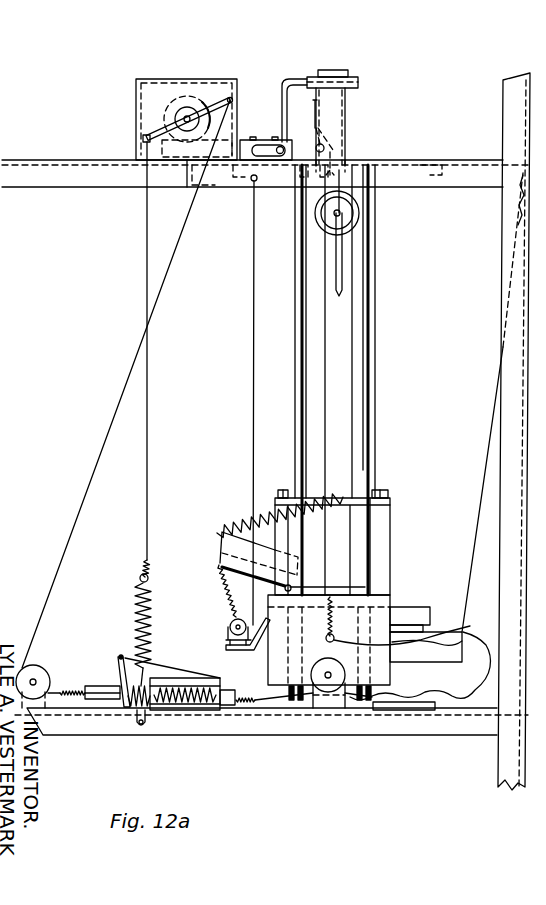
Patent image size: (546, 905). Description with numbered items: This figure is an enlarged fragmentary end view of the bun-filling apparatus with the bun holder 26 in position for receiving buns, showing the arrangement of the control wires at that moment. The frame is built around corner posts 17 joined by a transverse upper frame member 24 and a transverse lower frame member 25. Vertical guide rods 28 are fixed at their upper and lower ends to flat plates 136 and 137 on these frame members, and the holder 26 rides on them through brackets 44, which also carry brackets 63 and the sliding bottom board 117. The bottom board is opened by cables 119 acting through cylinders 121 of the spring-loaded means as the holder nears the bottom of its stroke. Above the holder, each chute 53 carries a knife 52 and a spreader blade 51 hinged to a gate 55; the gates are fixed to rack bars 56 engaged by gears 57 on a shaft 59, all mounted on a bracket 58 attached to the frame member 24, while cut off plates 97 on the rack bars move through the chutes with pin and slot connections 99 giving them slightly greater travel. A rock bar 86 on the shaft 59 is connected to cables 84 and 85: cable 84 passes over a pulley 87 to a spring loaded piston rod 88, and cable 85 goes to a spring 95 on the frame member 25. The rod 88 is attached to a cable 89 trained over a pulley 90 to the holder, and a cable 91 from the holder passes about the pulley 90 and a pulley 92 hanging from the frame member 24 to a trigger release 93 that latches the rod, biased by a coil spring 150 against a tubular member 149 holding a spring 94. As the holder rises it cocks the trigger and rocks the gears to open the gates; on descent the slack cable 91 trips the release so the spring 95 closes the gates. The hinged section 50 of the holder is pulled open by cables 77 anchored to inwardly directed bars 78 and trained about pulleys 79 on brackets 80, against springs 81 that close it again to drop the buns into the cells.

The corner posts 17 is at (503, 223).
The upper transverse frame member 24 is at (85, 178).
The lower transverse frame member 25 is at (112, 730).
The bun holder 26 is at (335, 530).
The guide rods 28 is at (298, 295).
The brackets 44 is at (383, 613).
The hinged section 50 is at (218, 557).
The spreader blade 51 is at (336, 252).
The knife 52 is at (343, 252).
The chute 53 is at (340, 118).
The gates 55 is at (335, 148).
The rack bars 56 is at (218, 142).
The gears 57 is at (203, 103).
The bracket 58 is at (142, 97).
The shaft 59 is at (185, 120).
The brackets 63 is at (387, 552).
The cables 77 is at (255, 367).
The inwardly directed bars 78 is at (252, 181).
The pulleys 79 is at (230, 630).
The brackets 80 is at (245, 653).
The springs 81 is at (258, 526).
The cables 84 is at (100, 452).
The cables 85 is at (148, 258).
The rock bar 86 is at (187, 102).
The pulleys 87 is at (36, 667).
The spring loaded piston rods 88 is at (105, 688).
The cables 89 is at (273, 697).
The pulleys 90 is at (347, 695).
The cables 91 is at (352, 346).
The pulleys 92 is at (356, 217).
The trigger releases 93 is at (119, 655).
The springs 94 is at (193, 710).
The springs 95 is at (148, 615).
The cut off plates 97 is at (338, 88).
The pin and slot connections 99 is at (292, 160).
The bottom board 117 is at (424, 612).
The cables 119 is at (488, 452).
The cylinders 121 is at (435, 655).
The flat plate 136 is at (430, 175).
The flat plate 137 is at (427, 710).
The tubular members 149 is at (178, 710).
The coil springs 150 is at (121, 655).